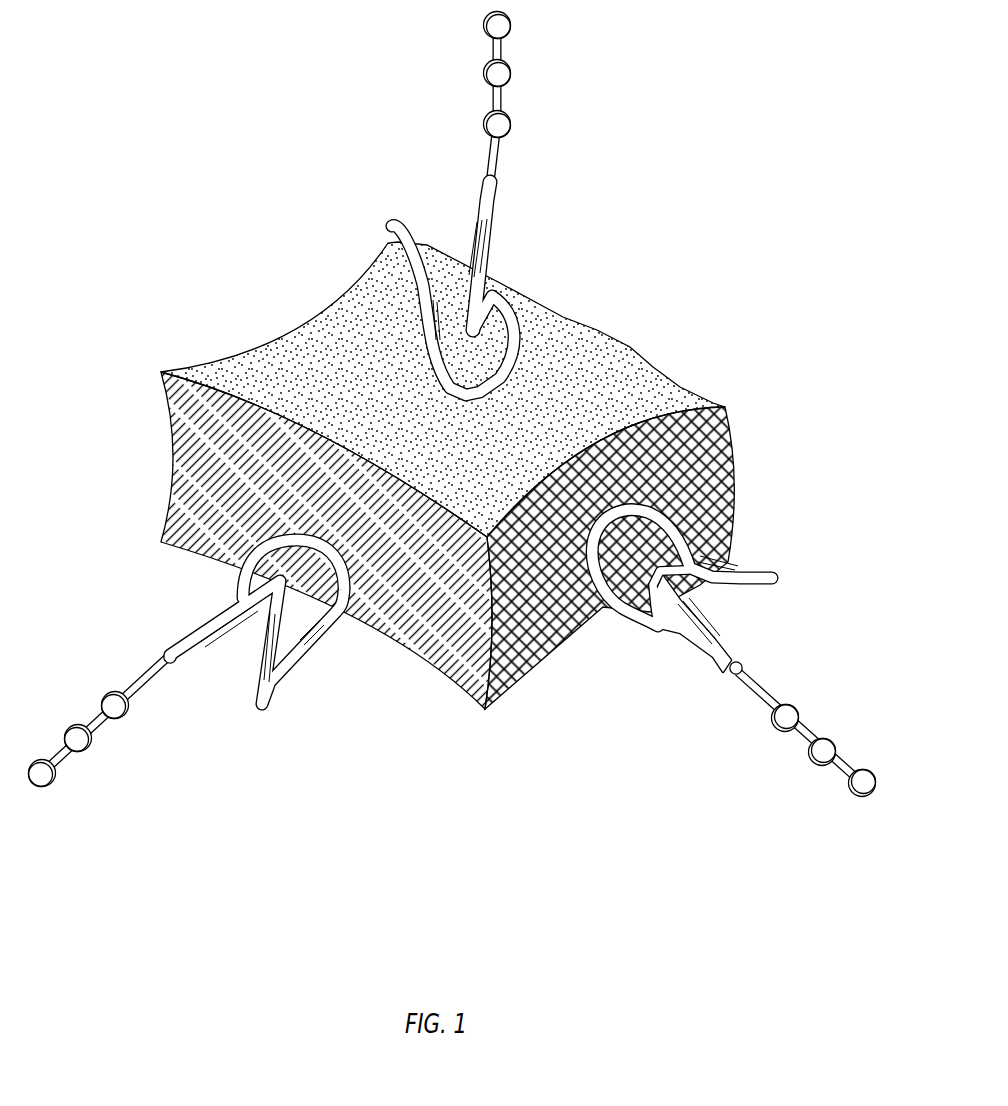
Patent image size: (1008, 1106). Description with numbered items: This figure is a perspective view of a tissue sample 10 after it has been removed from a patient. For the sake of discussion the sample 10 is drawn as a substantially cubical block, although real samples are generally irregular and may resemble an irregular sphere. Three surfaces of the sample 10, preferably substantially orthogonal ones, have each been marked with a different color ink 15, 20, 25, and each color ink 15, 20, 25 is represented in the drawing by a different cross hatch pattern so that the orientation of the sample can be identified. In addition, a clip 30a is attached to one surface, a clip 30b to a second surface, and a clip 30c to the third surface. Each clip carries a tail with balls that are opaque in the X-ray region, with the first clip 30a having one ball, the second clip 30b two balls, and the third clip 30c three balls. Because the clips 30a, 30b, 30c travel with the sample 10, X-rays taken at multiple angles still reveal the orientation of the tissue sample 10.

The tissue sample 10 is at (481, 447).
The color ink 15 is at (553, 627).
The color ink 20 is at (638, 400).
The color ink 25 is at (405, 650).
The clip 30a is at (737, 588).
The clip 30b is at (492, 125).
The clip 30c is at (88, 742).